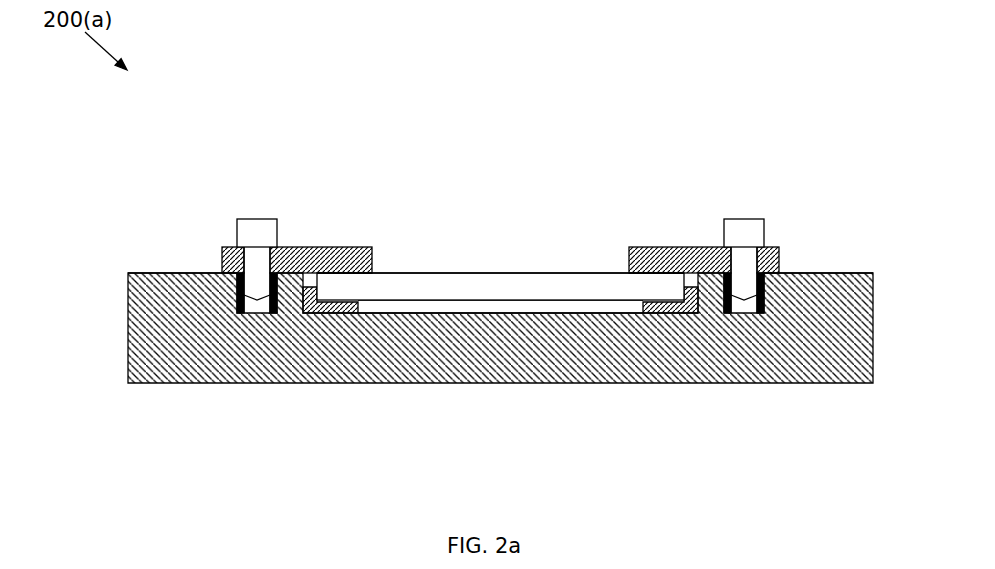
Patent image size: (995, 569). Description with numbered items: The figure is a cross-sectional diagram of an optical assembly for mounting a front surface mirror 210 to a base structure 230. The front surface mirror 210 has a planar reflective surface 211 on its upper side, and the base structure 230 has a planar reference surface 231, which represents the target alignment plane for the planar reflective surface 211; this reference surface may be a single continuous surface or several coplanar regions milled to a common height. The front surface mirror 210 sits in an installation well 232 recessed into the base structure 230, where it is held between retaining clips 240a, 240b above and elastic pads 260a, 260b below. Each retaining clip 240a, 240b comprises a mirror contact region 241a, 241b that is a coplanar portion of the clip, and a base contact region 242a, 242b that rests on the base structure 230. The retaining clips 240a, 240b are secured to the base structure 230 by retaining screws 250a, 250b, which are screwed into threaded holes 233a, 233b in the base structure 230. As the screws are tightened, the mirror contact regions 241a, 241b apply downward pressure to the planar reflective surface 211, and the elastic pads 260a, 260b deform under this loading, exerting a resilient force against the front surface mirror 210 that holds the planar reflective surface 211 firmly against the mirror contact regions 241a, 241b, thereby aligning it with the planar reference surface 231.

The front surface mirror 210 is at (560, 287).
The planar reflective surface 211 is at (438, 273).
The base structure 230 is at (410, 358).
The planar reference surface 231 is at (170, 273).
The installation well 232 is at (533, 313).
The threaded hole 233a is at (250, 313).
The threaded hole 233b is at (751, 313).
The retaining clip 240a is at (290, 257).
The retaining clip 240b is at (695, 255).
The mirror contact region 241a is at (333, 272).
The mirror contact region 241b is at (669, 272).
The base contact region 242a is at (222, 247).
The base contact region 242b is at (779, 247).
The retaining screw 250a is at (257, 218).
The retaining screw 250b is at (744, 218).
The elastic pad 260a is at (330, 313).
The elastic pad 260b is at (670, 313).